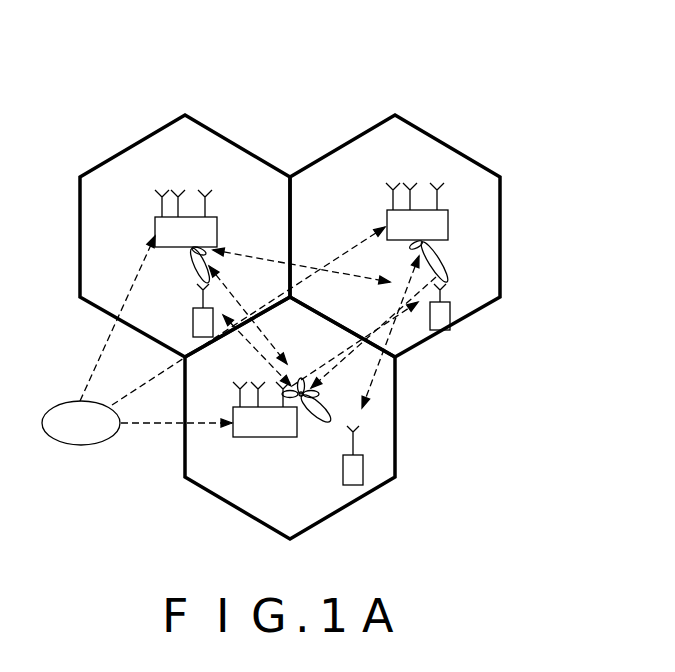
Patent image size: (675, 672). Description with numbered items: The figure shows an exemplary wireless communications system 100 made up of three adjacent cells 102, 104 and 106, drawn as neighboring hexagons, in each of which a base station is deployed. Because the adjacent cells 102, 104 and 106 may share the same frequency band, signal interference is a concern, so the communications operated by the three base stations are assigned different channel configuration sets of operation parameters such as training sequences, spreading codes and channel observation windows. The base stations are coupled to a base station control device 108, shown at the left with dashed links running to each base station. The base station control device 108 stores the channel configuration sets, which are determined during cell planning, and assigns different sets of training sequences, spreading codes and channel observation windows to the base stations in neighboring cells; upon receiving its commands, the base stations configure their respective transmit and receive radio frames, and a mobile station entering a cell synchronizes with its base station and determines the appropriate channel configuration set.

The wireless communications system 100 is at (468, 64).
The cell 102 is at (227, 136).
The cell 104 is at (487, 166).
The cell 106 is at (347, 508).
The base station control device 108 is at (84, 445).